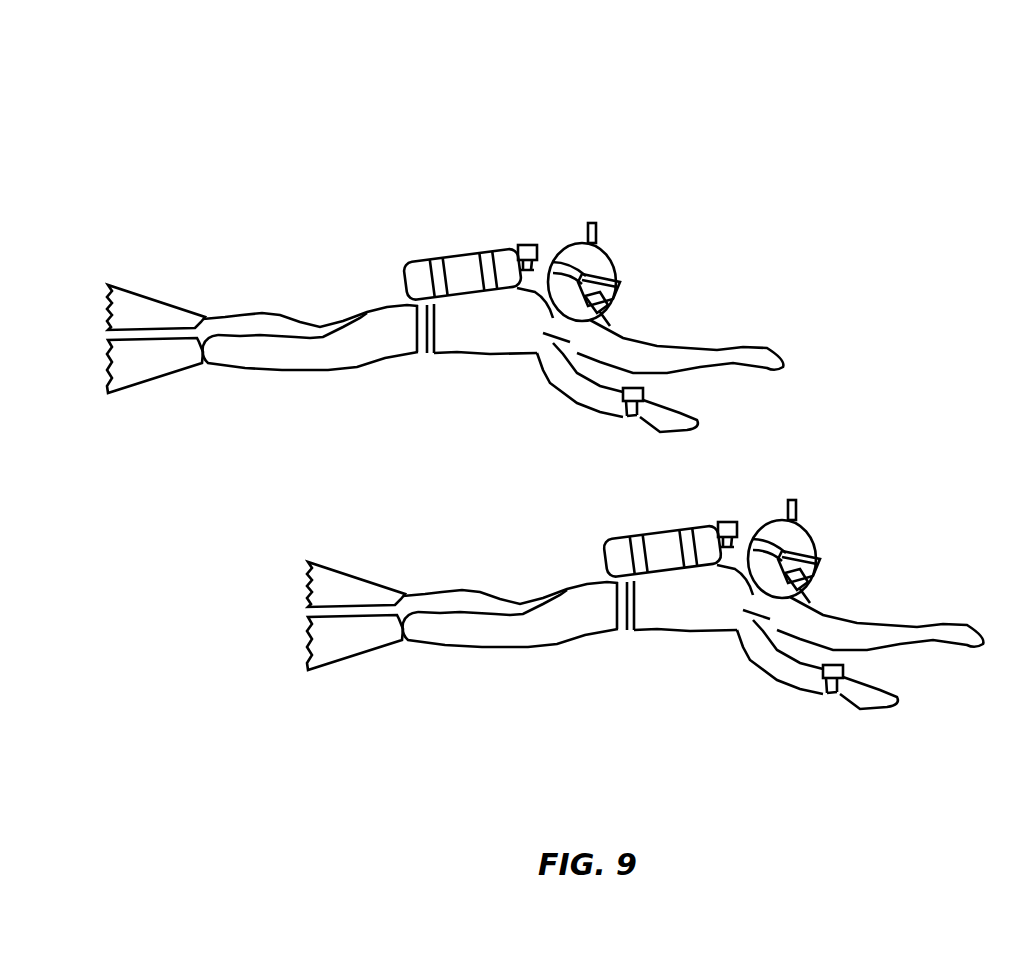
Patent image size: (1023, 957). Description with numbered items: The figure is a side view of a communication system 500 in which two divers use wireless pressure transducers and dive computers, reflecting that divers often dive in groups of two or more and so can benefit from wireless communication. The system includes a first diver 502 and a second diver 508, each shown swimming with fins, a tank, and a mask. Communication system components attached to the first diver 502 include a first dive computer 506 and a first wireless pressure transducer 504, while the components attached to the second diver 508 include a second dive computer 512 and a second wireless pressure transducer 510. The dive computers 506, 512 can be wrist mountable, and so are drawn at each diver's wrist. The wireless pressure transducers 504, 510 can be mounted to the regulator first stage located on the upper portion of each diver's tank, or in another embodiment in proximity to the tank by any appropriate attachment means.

The communication system 500 is at (882, 115).
The first diver 502 is at (481, 302).
The first wireless pressure transducer 504 is at (526, 243).
The first dive computer 506 is at (645, 397).
The second diver 508 is at (661, 585).
The second wireless pressure transducer 510 is at (769, 504).
The second dive computer 512 is at (900, 679).